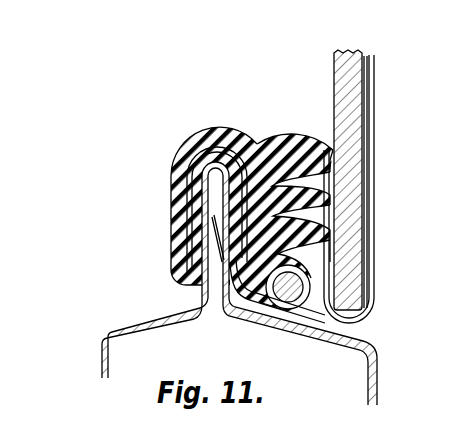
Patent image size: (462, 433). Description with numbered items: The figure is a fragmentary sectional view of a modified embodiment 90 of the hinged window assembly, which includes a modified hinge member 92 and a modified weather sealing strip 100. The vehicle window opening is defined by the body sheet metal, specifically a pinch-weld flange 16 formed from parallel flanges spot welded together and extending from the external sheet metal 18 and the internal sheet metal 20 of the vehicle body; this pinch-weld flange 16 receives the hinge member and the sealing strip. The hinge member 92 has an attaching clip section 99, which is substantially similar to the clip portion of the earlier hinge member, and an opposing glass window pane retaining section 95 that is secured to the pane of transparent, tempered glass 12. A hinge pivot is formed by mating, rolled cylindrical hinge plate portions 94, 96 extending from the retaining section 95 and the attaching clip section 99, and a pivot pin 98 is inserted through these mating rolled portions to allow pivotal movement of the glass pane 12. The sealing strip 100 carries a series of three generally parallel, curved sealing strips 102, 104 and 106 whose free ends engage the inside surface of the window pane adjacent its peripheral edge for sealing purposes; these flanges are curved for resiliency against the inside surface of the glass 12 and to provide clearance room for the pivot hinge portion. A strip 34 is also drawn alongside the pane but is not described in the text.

The embodiment of the window assembly 90 is at (271, 202).
The weather sealing strip 100 is at (234, 127).
The glass pane 12 is at (335, 78).
The curved sealing strip 102 is at (327, 150).
The strip 34 is at (371, 148).
The curved sealing strip 104 is at (327, 205).
The curved sealing strip 106 is at (310, 250).
The glass window pane retaining section 95 is at (368, 252).
The pivot pin 98 is at (291, 287).
The hinge member 92 is at (370, 322).
The external sheet metal 18 is at (377, 370).
The rolled cylindrical hinge plate portion 94 is at (303, 318).
The rolled cylindrical hinge plate portion 96 is at (251, 302).
The attaching clip section 99 is at (188, 160).
The pinch-weld flange 16 is at (202, 192).
The internal sheet metal 20 is at (102, 350).